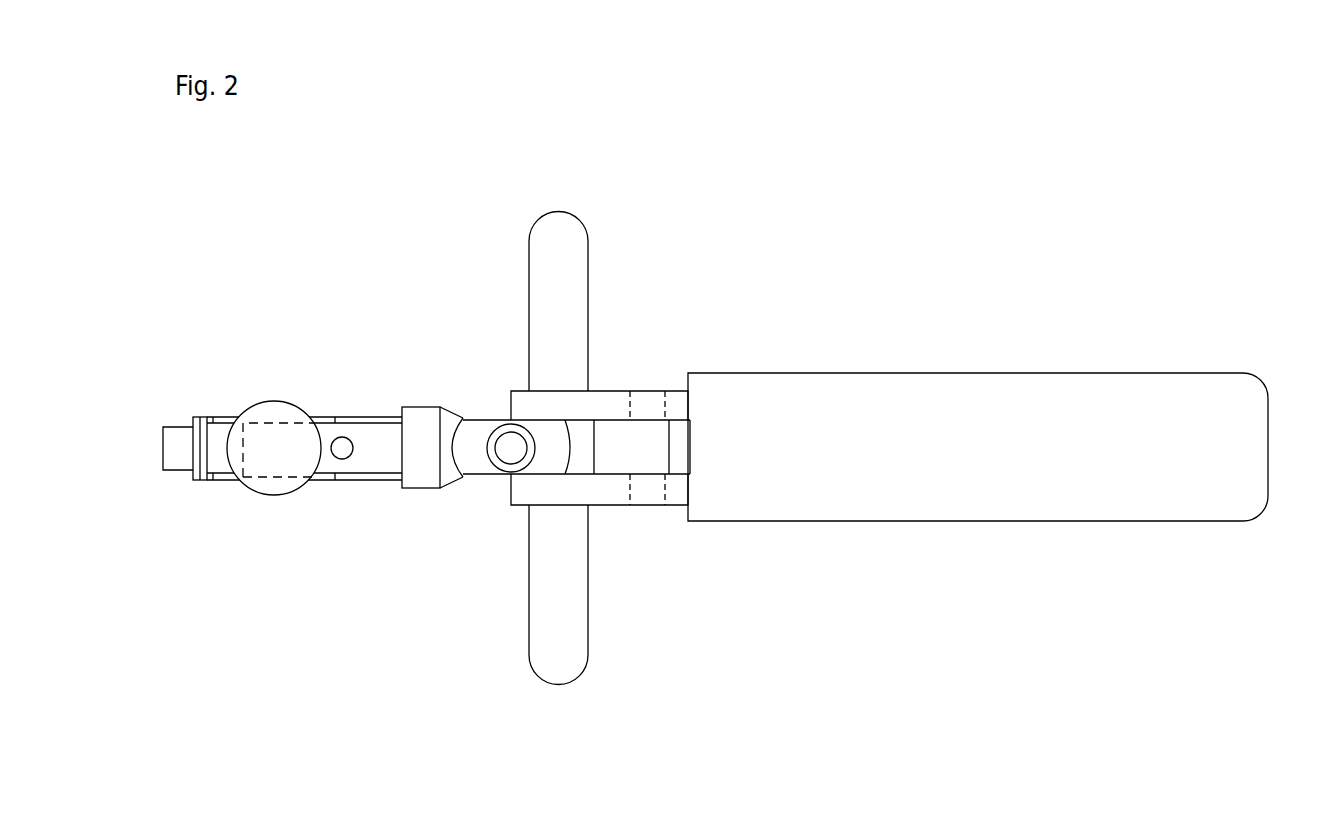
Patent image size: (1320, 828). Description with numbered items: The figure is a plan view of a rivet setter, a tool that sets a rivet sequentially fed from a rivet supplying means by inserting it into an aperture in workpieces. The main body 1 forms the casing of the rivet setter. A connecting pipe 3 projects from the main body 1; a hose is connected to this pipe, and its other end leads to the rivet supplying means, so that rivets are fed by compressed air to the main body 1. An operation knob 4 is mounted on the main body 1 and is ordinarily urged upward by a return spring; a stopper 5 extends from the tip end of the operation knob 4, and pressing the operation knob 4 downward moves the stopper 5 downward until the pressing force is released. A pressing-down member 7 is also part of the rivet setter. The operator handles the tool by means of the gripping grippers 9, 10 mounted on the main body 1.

The main body 1 is at (424, 420).
The connecting pipe 3 is at (504, 470).
The operation knob 4 is at (272, 413).
The stopper 5 is at (341, 437).
The pressing-down member 7 is at (200, 417).
The gripper 9 is at (892, 390).
The gripper 10 is at (573, 260).